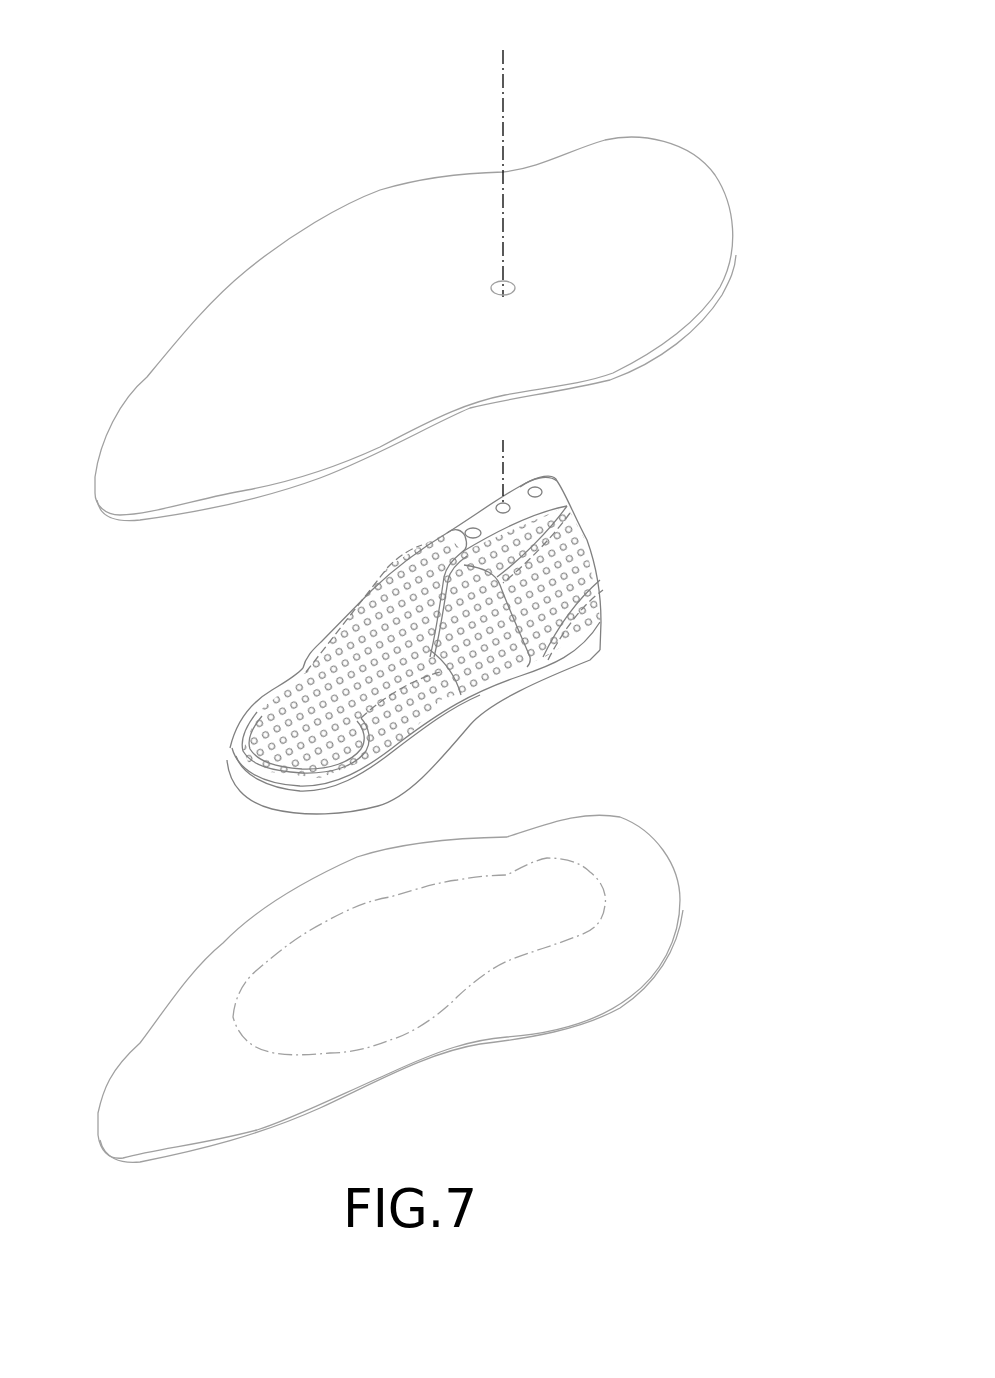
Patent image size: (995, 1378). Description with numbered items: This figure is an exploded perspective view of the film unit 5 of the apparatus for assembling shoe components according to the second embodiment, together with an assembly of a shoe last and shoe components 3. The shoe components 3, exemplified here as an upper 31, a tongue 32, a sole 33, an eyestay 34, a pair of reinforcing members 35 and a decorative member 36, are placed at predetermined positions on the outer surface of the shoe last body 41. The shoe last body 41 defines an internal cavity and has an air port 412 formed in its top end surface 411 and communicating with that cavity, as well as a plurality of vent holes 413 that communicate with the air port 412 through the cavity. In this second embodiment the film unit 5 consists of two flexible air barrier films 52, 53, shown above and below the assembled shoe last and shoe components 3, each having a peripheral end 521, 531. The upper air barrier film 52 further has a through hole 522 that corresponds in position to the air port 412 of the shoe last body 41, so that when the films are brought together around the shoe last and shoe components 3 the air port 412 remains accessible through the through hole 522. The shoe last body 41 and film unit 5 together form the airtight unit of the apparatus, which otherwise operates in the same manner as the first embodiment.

The film unit 5 is at (614, 132).
The air barrier film 52 is at (173, 350).
The peripheral end 521 is at (150, 485).
The through hole 522 is at (490, 288).
The air barrier film 53 is at (148, 1030).
The peripheral end 531 is at (212, 1120).
The shoe components 3 is at (327, 621).
The upper 31 is at (458, 693).
The tongue 32 is at (393, 578).
The sole 33 is at (593, 657).
The eyestay 34 is at (403, 750).
The reinforcing members 35 is at (500, 670).
The decorative member 36 is at (597, 583).
The shoe last body 41 is at (557, 482).
The top end surface 411 is at (519, 485).
The air port 412 is at (503, 508).
The vent holes 413 is at (553, 512).